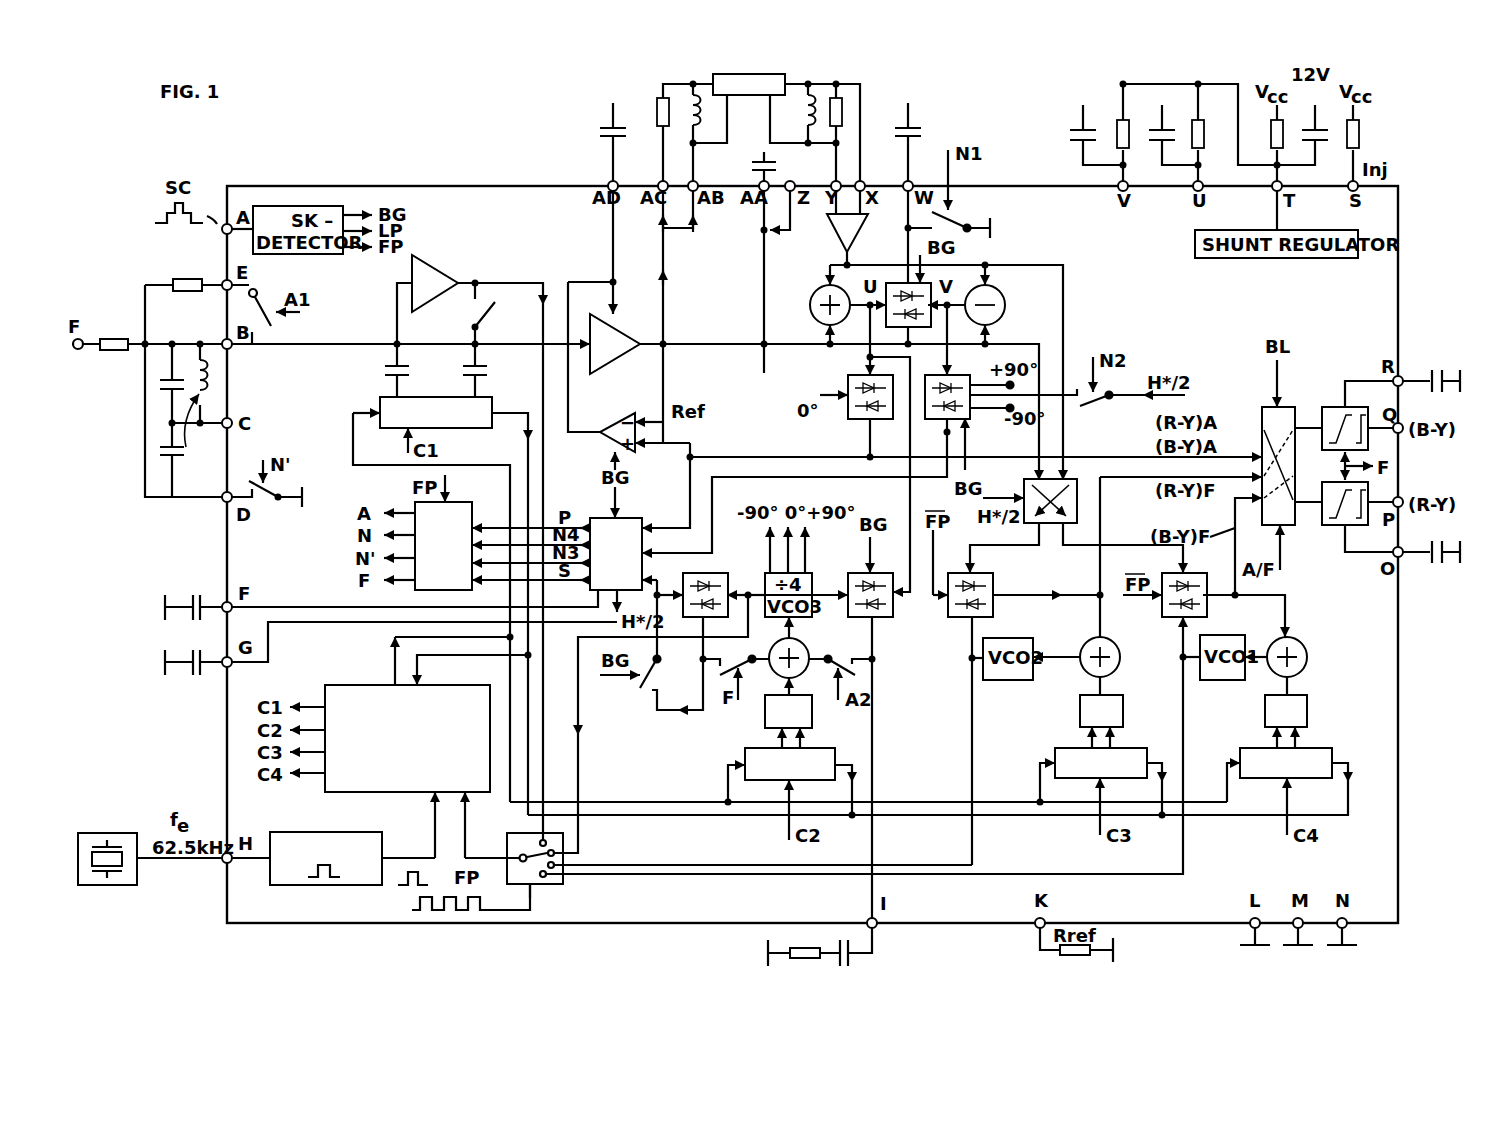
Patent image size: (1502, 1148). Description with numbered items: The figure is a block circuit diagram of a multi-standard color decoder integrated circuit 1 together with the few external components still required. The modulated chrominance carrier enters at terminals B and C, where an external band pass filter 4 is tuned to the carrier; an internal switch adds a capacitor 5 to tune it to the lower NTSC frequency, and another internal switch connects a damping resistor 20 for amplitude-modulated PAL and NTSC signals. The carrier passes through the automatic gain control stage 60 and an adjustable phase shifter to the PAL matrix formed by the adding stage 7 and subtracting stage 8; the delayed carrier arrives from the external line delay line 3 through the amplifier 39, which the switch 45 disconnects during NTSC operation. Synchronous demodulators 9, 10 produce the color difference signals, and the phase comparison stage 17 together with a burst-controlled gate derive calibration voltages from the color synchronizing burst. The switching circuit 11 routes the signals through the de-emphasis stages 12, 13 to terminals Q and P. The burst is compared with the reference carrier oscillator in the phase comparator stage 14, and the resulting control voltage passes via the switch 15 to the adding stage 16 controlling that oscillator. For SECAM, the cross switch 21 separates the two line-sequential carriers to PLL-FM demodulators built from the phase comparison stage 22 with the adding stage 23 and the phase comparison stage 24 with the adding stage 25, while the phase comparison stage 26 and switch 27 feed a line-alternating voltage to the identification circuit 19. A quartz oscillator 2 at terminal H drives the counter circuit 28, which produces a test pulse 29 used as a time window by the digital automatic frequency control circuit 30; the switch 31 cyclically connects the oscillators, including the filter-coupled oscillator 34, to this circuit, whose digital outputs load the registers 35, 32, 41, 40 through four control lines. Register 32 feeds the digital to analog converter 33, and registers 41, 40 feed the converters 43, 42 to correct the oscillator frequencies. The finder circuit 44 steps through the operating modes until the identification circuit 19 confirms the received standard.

The integrated circuit 1 is at (432, 186).
The quartz oscillator 2 is at (152, 847).
The line delay line 3 is at (758, 130).
The band pass filter 4 is at (198, 398).
The capacitor 5 is at (151, 383).
The adding stage 7 is at (841, 314).
The subtracting stage 8 is at (974, 314).
The synchronous demodulator 9 is at (856, 381).
The synchronous demodulator 10 is at (859, 429).
The switching circuit 11 is at (1262, 411).
The de-emphasis stage 12 is at (1332, 410).
The de-emphasis stage 13 is at (1340, 528).
The phase comparator stage 14 is at (890, 601).
The switch 15 is at (862, 663).
The adding stage 16 is at (791, 656).
The phase comparison stage 17 is at (891, 283).
The identification circuit 19 is at (618, 549).
The damping resistor 20 is at (197, 298).
The SECAM cross switch 21 is at (1076, 522).
The phase comparison stage 22 is at (1016, 715).
The adding stage 23 is at (1115, 586).
The phase comparison stage 24 is at (915, 686).
The adding stage 25 is at (1301, 666).
The phase comparison stage 26 is at (708, 628).
The switch 27 is at (630, 648).
The counter and pulse generator circuit 28 is at (331, 872).
The test pulse 29 is at (413, 887).
The digital automatic frequency control circuit 30 is at (342, 686).
The switch 31 is at (718, 856).
The register 32 is at (783, 784).
The digital to analog converter 33 is at (812, 722).
The internal oscillator 34 is at (429, 297).
The register 35 is at (436, 386).
The amplifier 39 is at (838, 238).
The register 40 is at (938, 781).
The register 41 is at (1094, 781).
The digital to analog converter 42 is at (1300, 720).
The digital to analog converter 43 is at (1115, 720).
The finder circuit 44 is at (468, 514).
The switch 45 is at (949, 217).
The AGC stage 60 is at (615, 353).